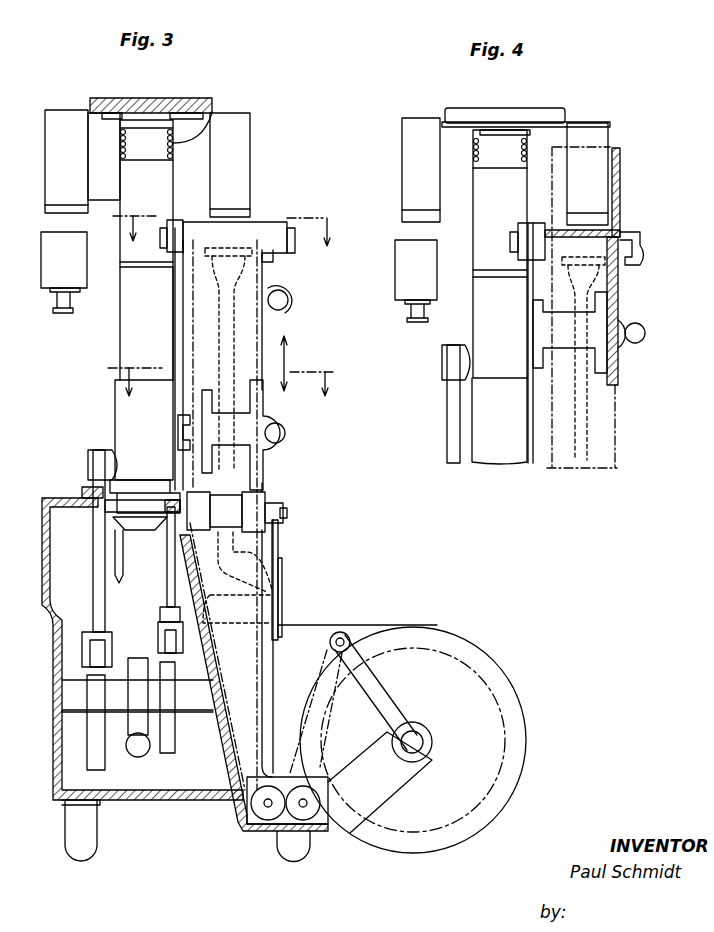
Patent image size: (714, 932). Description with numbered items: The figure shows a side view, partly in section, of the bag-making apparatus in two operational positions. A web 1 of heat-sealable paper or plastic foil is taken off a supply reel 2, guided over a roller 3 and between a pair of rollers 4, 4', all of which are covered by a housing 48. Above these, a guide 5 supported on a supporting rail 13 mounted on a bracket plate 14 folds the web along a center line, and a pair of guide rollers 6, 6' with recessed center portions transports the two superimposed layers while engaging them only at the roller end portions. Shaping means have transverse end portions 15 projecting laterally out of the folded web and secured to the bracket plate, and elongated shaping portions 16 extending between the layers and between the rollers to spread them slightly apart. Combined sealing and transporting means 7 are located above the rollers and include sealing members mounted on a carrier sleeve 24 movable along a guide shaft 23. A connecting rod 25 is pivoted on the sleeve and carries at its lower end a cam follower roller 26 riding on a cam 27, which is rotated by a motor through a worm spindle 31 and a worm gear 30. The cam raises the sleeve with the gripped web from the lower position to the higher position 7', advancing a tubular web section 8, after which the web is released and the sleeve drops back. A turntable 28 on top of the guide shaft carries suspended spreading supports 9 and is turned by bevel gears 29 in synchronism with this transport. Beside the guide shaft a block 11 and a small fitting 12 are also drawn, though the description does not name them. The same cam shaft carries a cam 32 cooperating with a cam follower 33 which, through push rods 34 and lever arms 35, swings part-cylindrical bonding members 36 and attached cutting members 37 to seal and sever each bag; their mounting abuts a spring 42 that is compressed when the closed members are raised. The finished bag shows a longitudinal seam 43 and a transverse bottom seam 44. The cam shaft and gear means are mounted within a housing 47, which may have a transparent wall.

In FIG. 3, the web 1 is at (318, 682).
In FIG. 3, the supply reel 2 is at (463, 667).
In FIG. 3, the roller 3 is at (342, 632).
In FIG. 3, the rollers 4 is at (281, 820).
In FIG. 3, the roller 4' is at (311, 825).
In FIG. 3, the guide 5 is at (274, 618).
In FIG. 3, the guide roller 6 is at (219, 378).
In FIG. 3, the guide roller 6' is at (251, 506).
In FIG. 3, the combined sealing and transporting means 7 is at (247, 435).
In FIG. 3, the higher position of sealing means 7' is at (297, 301).
In FIG. 4, the higher position of sealing means 7' is at (639, 352).
In FIG. 3, the tubular web sections 8 is at (266, 322).
In FIG. 4, the tubular web sections 8 is at (623, 160).
In FIG. 3, the spreading supports 9 is at (75, 175).
In FIG. 4, the spreading supports 9 is at (408, 158).
In FIG. 3, the block 11 is at (80, 263).
In FIG. 4, the block 11 is at (430, 275).
In FIG. 3, the fitting 12 is at (62, 313).
In FIG. 4, the fitting 12 is at (416, 324).
In FIG. 3, the supporting rail 13 is at (278, 592).
In FIG. 3, the bracket plate 14 is at (279, 546).
In FIG. 3, the transverse end portions 15 is at (283, 572).
In FIG. 3, the shaping portions 16 is at (230, 350).
In FIG. 3, the guide shaft 23 is at (128, 297).
In FIG. 3, the sleeve 24 is at (125, 418).
In FIG. 3, the connecting rod 25 is at (92, 499).
In FIG. 4, the connecting rod 25 is at (453, 432).
In FIG. 3, the cam follower roller 26 is at (85, 665).
In FIG. 3, the cam 27 is at (95, 745).
In FIG. 3, the turntable 28 is at (128, 103).
In FIG. 4, the turntable 28 is at (483, 113).
In FIG. 3, the bevel gears 29 is at (150, 525).
In FIG. 3, the worm gear 30 is at (109, 541).
In FIG. 3, the worm spindle 31 is at (133, 757).
In FIG. 3, the cam 32 is at (168, 755).
In FIG. 3, the cam follower 33 is at (155, 580).
In FIG. 3, the push rods 34 is at (175, 300).
In FIG. 3, the lever arms 35 is at (170, 225).
In FIG. 3, the bonding members 36 is at (280, 262).
In FIG. 4, the bonding members 36 is at (606, 358).
In FIG. 4, the cutting members 37 is at (647, 321).
In FIG. 3, the spring 42 is at (212, 113).
In FIG. 4, the longitudinal seam 43 is at (620, 197).
In FIG. 4, the transverse bottom seam 44 is at (623, 218).
In FIG. 3, the housing 47 is at (53, 625).
In FIG. 3, the housing 48 is at (522, 730).